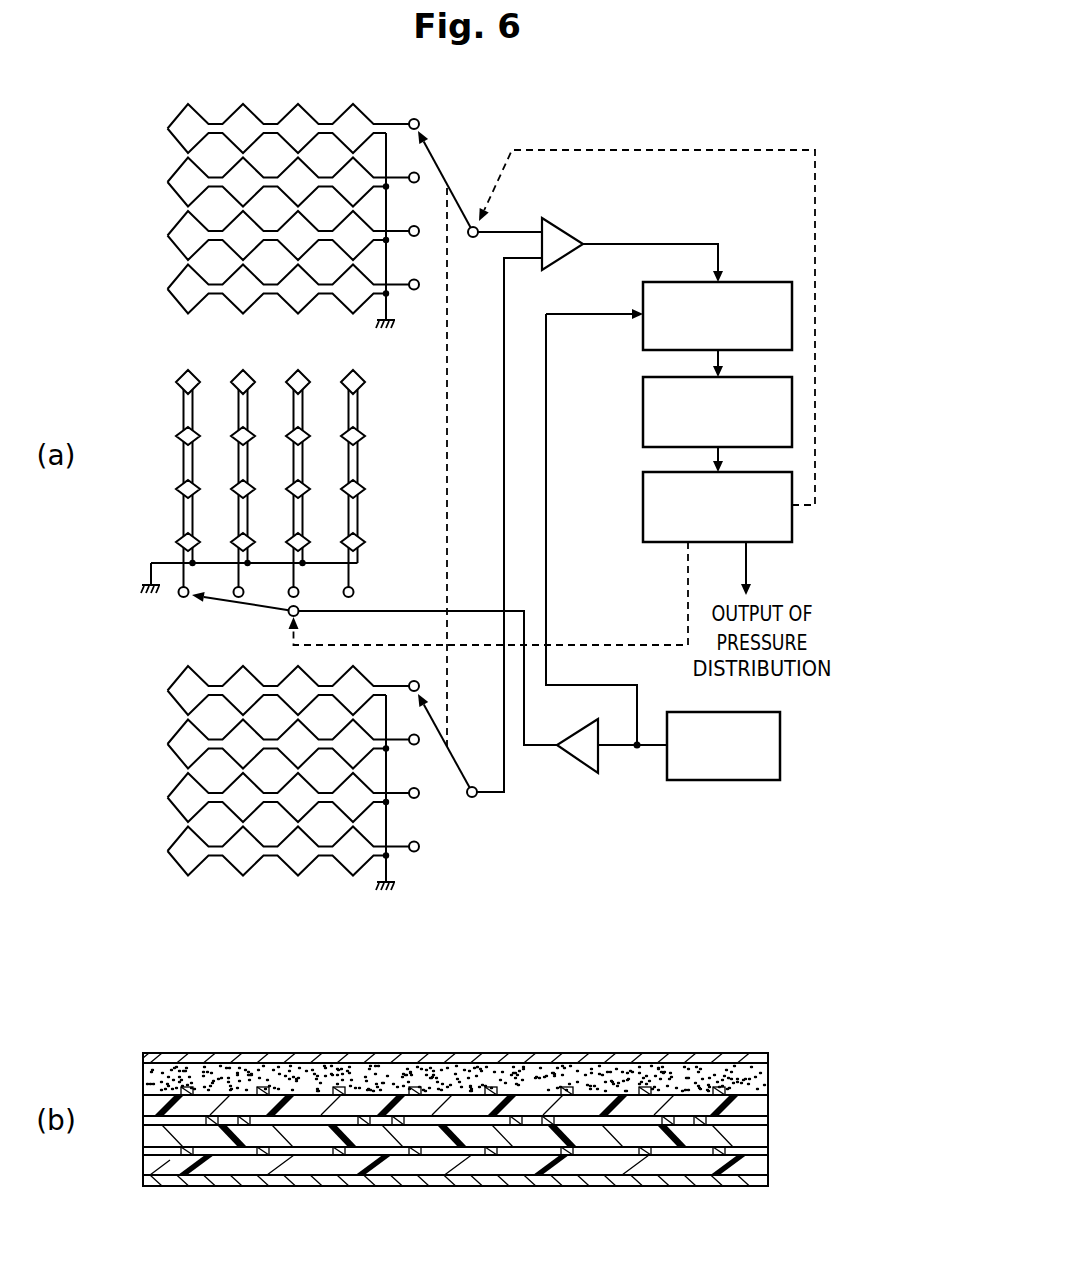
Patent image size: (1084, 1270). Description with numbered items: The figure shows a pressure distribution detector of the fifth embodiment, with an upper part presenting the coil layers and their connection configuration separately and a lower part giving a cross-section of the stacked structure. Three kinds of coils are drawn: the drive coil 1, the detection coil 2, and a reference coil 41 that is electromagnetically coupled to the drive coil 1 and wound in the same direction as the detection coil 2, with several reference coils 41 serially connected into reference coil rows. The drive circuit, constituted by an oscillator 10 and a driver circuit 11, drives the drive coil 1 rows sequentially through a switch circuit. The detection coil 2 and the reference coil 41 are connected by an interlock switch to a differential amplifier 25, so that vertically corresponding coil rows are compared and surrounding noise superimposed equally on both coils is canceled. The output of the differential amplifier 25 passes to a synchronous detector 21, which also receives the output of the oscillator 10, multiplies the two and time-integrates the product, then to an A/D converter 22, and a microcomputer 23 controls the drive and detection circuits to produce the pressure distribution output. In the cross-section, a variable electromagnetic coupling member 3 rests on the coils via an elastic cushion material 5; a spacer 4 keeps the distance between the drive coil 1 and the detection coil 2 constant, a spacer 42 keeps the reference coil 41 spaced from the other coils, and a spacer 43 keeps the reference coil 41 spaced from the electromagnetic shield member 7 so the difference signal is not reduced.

The drive coil 1 is at (183, 372).
The detection coil 2 is at (170, 118).
The reference coil 41 is at (180, 668).
The differential amplifier 25 is at (560, 227).
The synchronous detector 21 is at (642, 337).
The A/D converter 22 is at (643, 417).
The microcomputer 23 is at (643, 507).
The driver circuit 11 is at (575, 762).
The oscillator 10 is at (727, 782).
The variable electromagnetic coupling member 3 is at (757, 1057).
The cushion material 5 is at (768, 1077).
The spacer 4 is at (760, 1107).
The spacer 42 is at (762, 1135).
The spacer 43 is at (763, 1167).
The electromagnetic shield member 7 is at (748, 1182).